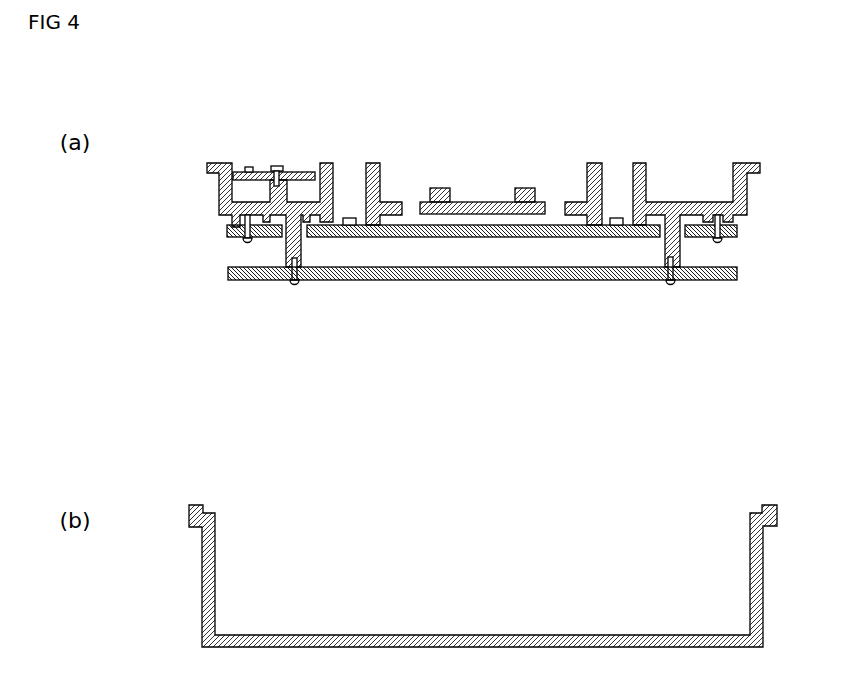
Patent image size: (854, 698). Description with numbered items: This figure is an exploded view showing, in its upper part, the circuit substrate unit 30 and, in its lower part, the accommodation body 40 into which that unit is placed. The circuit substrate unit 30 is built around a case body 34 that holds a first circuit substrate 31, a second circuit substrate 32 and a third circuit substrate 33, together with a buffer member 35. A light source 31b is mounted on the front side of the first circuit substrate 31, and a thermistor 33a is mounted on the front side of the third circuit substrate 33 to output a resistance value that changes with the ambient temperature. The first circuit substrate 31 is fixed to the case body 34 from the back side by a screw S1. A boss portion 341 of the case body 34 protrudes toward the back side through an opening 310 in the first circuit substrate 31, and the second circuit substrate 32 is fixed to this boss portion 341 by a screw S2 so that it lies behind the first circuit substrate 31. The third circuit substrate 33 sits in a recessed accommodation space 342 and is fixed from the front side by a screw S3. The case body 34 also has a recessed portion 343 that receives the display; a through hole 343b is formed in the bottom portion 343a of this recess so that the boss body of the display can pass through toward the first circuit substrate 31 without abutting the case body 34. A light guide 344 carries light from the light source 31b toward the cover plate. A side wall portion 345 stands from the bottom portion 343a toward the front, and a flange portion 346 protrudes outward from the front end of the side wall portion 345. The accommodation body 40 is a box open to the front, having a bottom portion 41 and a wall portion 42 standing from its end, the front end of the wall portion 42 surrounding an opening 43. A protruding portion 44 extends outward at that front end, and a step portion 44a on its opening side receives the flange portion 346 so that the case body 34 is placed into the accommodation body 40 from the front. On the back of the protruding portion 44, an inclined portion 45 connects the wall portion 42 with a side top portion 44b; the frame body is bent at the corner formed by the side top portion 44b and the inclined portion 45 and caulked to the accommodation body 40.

The circuit substrate unit 30 is at (693, 112).
The first circuit substrate 31 is at (434, 238).
The light source 31b is at (348, 226).
The second circuit substrate 32 is at (555, 281).
The third circuit substrate 33 is at (306, 172).
The thermistor 33a is at (249, 167).
The case body 34 is at (736, 137).
The buffer member 35 is at (514, 188).
The opening 310 is at (272, 268).
The boss portion 341 is at (302, 245).
The recessed accommodation space 342 is at (232, 215).
The recessed portion 343 is at (558, 154).
The bottom portion 343a is at (488, 215).
The through hole 343b is at (403, 203).
The light guide 344 is at (366, 178).
The side wall portion 345 is at (220, 191).
The flange portion 346 is at (209, 165).
The screw S1 is at (244, 240).
The screw S2 is at (295, 285).
The screw S3 is at (277, 166).
The accommodation body 40 is at (637, 484).
The bottom portion 41 is at (452, 633).
The wall portion 42 is at (202, 598).
The opening 43 is at (217, 518).
The protruding portion 44 is at (191, 507).
The step portion 44a is at (218, 500).
The side top portion 44b is at (189, 518).
The inclined portion 45 is at (188, 530).